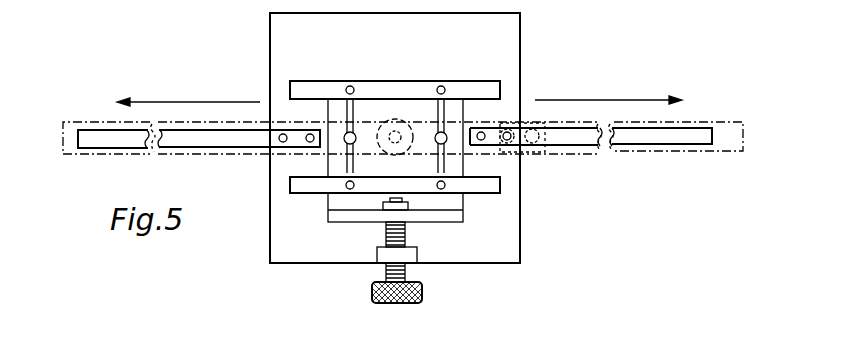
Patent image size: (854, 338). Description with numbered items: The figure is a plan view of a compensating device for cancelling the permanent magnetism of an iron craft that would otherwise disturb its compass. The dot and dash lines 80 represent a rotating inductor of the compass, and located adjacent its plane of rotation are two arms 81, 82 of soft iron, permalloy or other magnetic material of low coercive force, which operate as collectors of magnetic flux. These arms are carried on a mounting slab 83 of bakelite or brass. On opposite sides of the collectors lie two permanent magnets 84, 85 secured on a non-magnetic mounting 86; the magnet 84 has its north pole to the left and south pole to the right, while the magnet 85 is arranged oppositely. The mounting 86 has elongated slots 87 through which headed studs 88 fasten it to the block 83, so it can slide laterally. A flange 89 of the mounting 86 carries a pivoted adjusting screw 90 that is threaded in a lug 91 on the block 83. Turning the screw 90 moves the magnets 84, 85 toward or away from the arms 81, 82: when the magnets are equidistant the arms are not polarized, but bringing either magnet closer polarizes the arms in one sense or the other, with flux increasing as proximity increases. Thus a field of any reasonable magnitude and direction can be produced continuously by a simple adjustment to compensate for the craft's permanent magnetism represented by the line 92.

The rotating inductor 80 is at (695, 118).
The arm 81 is at (575, 145).
The arm 82 is at (245, 148).
The mounting slab 83 is at (505, 235).
The permanent magnet 84 is at (405, 82).
The permanent magnet 85 is at (472, 193).
The non-magnetic mounting 86 is at (364, 112).
The elongated slots 87 is at (350, 112).
The headed studs 88 is at (345, 141).
The flange 89 is at (427, 215).
The adjusting screw 90 is at (372, 291).
The lug 91 is at (405, 252).
The permanent magnetism field line 92 is at (212, 101).